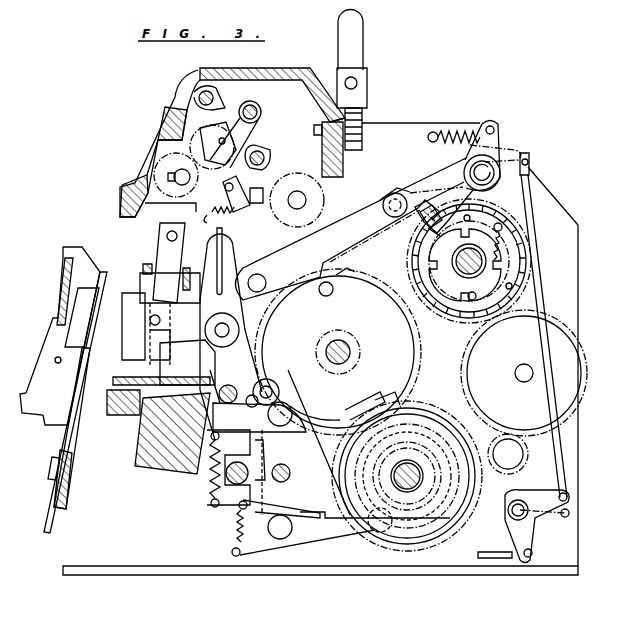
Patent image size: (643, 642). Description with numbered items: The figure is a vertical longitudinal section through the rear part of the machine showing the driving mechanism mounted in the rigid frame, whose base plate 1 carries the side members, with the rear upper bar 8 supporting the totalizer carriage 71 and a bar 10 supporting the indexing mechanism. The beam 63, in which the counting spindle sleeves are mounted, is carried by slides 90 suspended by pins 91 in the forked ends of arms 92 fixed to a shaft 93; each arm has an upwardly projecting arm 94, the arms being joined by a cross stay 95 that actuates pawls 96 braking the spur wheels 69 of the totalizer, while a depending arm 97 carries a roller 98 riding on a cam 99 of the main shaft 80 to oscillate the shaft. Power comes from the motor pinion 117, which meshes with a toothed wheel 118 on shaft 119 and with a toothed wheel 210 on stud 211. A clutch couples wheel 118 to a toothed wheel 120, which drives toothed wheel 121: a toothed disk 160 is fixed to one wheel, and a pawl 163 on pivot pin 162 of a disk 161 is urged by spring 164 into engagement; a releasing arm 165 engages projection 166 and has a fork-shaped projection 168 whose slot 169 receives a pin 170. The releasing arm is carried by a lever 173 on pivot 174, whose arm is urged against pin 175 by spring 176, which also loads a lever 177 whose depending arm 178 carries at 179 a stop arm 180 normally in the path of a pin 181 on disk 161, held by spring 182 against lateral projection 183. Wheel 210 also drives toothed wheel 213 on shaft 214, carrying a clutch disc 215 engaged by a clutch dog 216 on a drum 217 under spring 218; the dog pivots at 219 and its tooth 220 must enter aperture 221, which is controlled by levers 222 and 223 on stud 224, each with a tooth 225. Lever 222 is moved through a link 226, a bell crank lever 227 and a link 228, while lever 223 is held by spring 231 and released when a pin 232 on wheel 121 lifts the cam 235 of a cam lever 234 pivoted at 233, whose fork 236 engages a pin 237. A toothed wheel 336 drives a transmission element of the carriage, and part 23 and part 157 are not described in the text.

The base plate 1 is at (307, 573).
The rear upper bar 8 is at (326, 157).
The bar 10 is at (63, 287).
The slide plate 23 is at (52, 340).
The beam 63 is at (152, 270).
The spur wheel 69 is at (153, 170).
The totalizer carriage 71 is at (165, 118).
The main shaft 80 is at (352, 343).
The slide 90 is at (150, 290).
The pin 91 is at (150, 321).
The arm 92 is at (145, 338).
The shaft 93 is at (205, 330).
The upwardly projecting arm 94 is at (237, 262).
The cross stay 95 is at (216, 265).
The pawl 96 is at (243, 219).
The depending arm 97 is at (220, 365).
The roller 98 is at (287, 398).
The cam 99 is at (350, 270).
The pinion 117 is at (524, 458).
The toothed wheel 118 is at (477, 522).
The shaft 119 is at (418, 470).
The toothed wheel 120 is at (425, 525).
The toothed wheel 121 is at (420, 324).
The cam 157 is at (305, 410).
The toothed disk 160 is at (425, 487).
The disk 161 is at (425, 402).
The pivot pin 162 is at (402, 433).
The pawl 163 is at (352, 480).
The spring 164 is at (346, 536).
The releasing arm 165 is at (366, 396).
The projection 166 is at (394, 394).
The fork-shaped projection 168 is at (248, 416).
The slot 169 is at (272, 382).
The pin 170 is at (230, 384).
The lever 173 is at (303, 445).
The pivot 174 is at (284, 462).
The pin 175 is at (212, 490).
The spring 176 is at (200, 488).
The lever 177 is at (180, 470).
The depending arm 178 is at (232, 554).
The mounting point 179 is at (282, 540).
The stop arm 180 is at (316, 538).
The pin 181 is at (398, 527).
The spring 182 is at (237, 535).
The lateral projection 183 is at (300, 508).
The toothed wheel 210 is at (580, 345).
The stud 211 is at (533, 372).
The toothed wheel 213 is at (525, 293).
The shaft 214 is at (486, 259).
The clutch disc 215 is at (494, 274).
The clutch dog 216 is at (470, 230).
The drum 217 is at (505, 238).
The spring 218 is at (516, 250).
The pivot 219 is at (462, 213).
The tooth 220 is at (430, 262).
The aperture 221 is at (426, 236).
The lever 222 is at (529, 163).
The lever 223 is at (420, 185).
The stud 224 is at (500, 156).
The tooth 225 is at (426, 250).
The link 226 is at (544, 326).
The bell crank lever 227 is at (536, 540).
The link 228 is at (490, 560).
The spring 231 is at (455, 124).
The pin 232 is at (330, 298).
The mounting 233 is at (268, 280).
The cam lever 234 is at (343, 214).
The cam 235 is at (288, 300).
The fork 236 is at (408, 197).
The pin 237 is at (395, 195).
The toothed wheel 336 is at (366, 126).